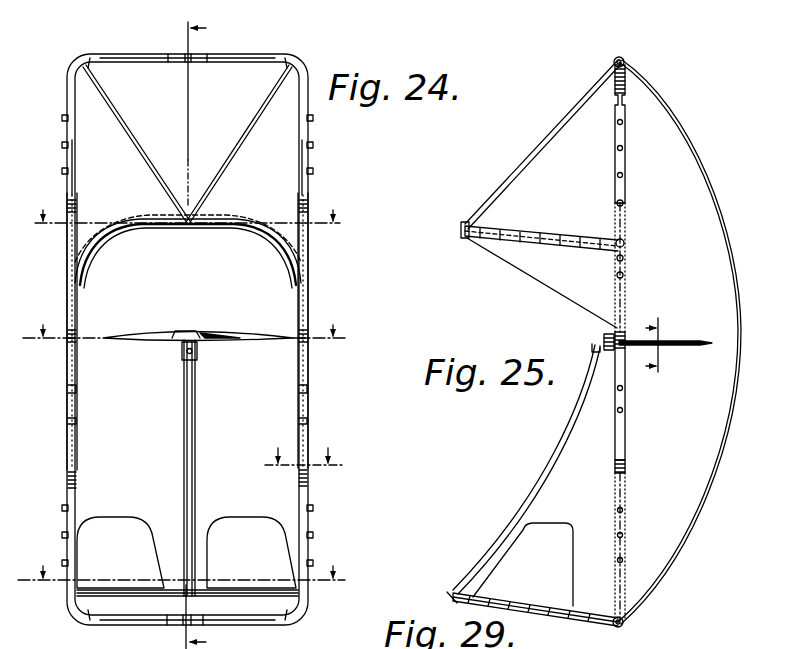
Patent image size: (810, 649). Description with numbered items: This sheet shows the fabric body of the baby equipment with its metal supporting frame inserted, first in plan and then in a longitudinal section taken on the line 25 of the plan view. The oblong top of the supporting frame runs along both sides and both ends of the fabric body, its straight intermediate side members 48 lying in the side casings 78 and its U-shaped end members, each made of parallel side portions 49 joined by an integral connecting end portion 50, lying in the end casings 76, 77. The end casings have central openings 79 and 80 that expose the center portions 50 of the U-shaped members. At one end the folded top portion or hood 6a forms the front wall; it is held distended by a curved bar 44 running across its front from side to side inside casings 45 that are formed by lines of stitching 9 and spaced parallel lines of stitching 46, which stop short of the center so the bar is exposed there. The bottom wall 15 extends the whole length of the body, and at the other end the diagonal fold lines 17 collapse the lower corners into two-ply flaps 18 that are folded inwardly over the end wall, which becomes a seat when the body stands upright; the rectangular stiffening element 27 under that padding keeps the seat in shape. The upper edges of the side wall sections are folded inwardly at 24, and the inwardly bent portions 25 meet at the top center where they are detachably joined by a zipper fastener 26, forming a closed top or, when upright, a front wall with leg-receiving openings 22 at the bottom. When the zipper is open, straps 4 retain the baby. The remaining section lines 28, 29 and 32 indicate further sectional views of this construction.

In FIG. 24, the straps 4 is at (188, 336).
In FIG. 25, the straps 4 is at (603, 338).
In FIG. 24, the hood 6a is at (215, 132).
In FIG. 25, the hood 6a is at (514, 177).
In FIG. 25, the lines of stitching 9 is at (596, 238).
In FIG. 25, the bottom wall 15 is at (738, 411).
In FIG. 25, the diagonal fold lines 17 is at (458, 605).
In FIG. 25, the two-ply flaps 18 is at (522, 602).
In FIG. 24, the leg-receiving openings 22 is at (110, 579).
In FIG. 25, the leg-receiving openings 22 is at (500, 578).
In FIG. 24, the inwardly folded upper edges 24 is at (68, 389).
In FIG. 24, the inwardly bent portions 25 is at (115, 430).
In FIG. 24, the zipper fastener 26 is at (191, 487).
In FIG. 25, the zipper fastener 26 is at (539, 495).
In FIG. 24, the rectangular stiffening element 27 is at (185, 321).
In FIG. 25, the rectangular stiffening element 27 is at (549, 614).
In FIG. 24, the section line 28 is at (182, 568).
In FIG. 25, the section line 29 is at (665, 344).
In FIG. 24, the section line 32 is at (303, 469).
In FIG. 24, the curved bar 44 is at (207, 221).
In FIG. 25, the curved bar 44 is at (531, 240).
In FIG. 25, the casings 45 is at (508, 226).
In FIG. 25, the lines of stitching 46 is at (536, 238).
In FIG. 25, the intermediate side members 48 is at (621, 378).
In FIG. 25, the side portions 49 is at (621, 116).
In FIG. 25, the connecting end portion 50 is at (626, 63).
In FIG. 24, the end casing 76 is at (250, 617).
In FIG. 24, the end casing 77 is at (233, 59).
In FIG. 24, the side casings 78 is at (64, 426).
In FIG. 24, the central opening 79 is at (199, 620).
In FIG. 24, the central opening 80 is at (188, 61).